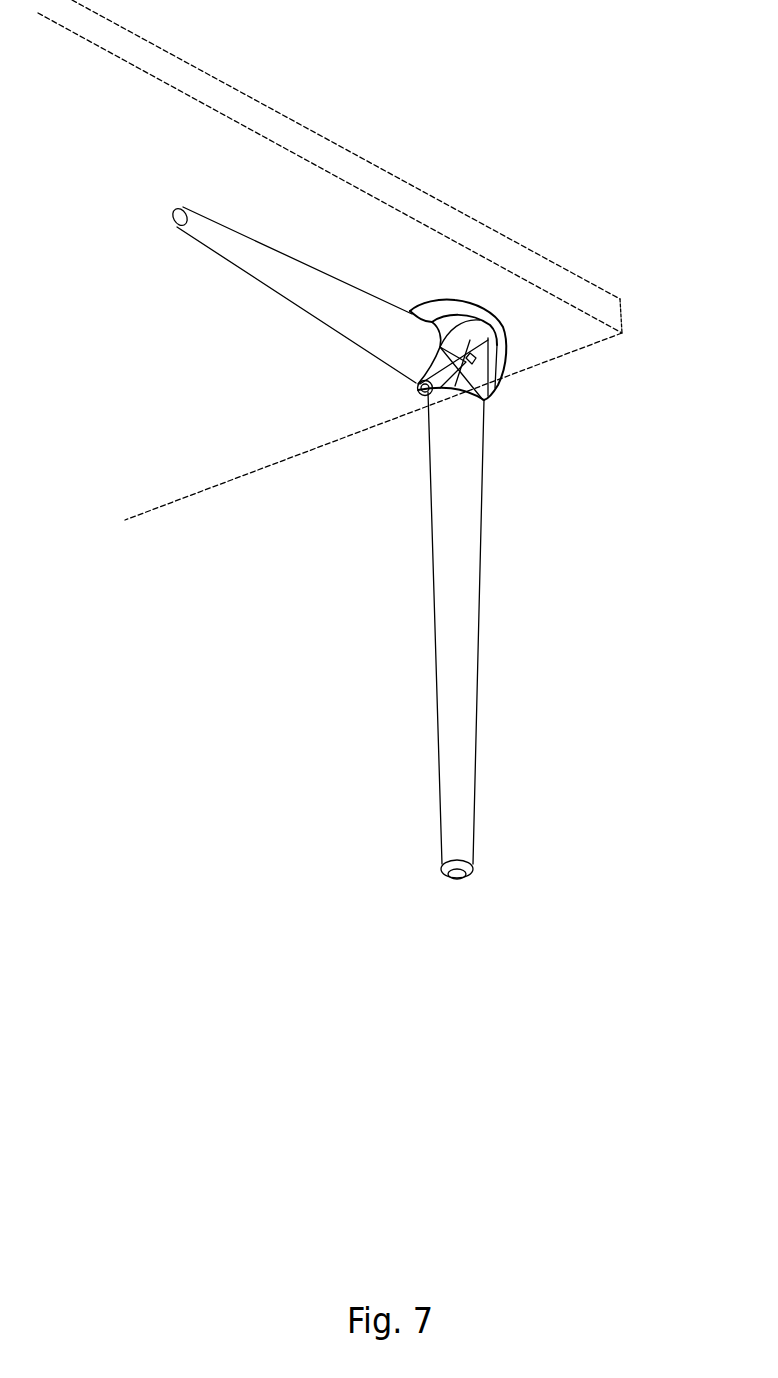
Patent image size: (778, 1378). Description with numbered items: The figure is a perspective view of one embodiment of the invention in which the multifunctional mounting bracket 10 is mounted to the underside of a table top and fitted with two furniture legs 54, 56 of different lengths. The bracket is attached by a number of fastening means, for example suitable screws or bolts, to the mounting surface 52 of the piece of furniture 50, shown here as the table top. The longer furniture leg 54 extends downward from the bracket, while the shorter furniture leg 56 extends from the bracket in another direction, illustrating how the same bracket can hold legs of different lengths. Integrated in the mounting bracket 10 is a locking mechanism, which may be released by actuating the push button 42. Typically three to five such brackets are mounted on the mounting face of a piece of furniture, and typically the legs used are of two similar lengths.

The multifunctional mounting bracket 10 is at (487, 334).
The push button 42 is at (426, 392).
The piece of furniture 50 is at (582, 248).
The mounting surface 52 is at (583, 328).
The furniture leg 54 is at (462, 490).
The furniture leg 56 is at (322, 307).